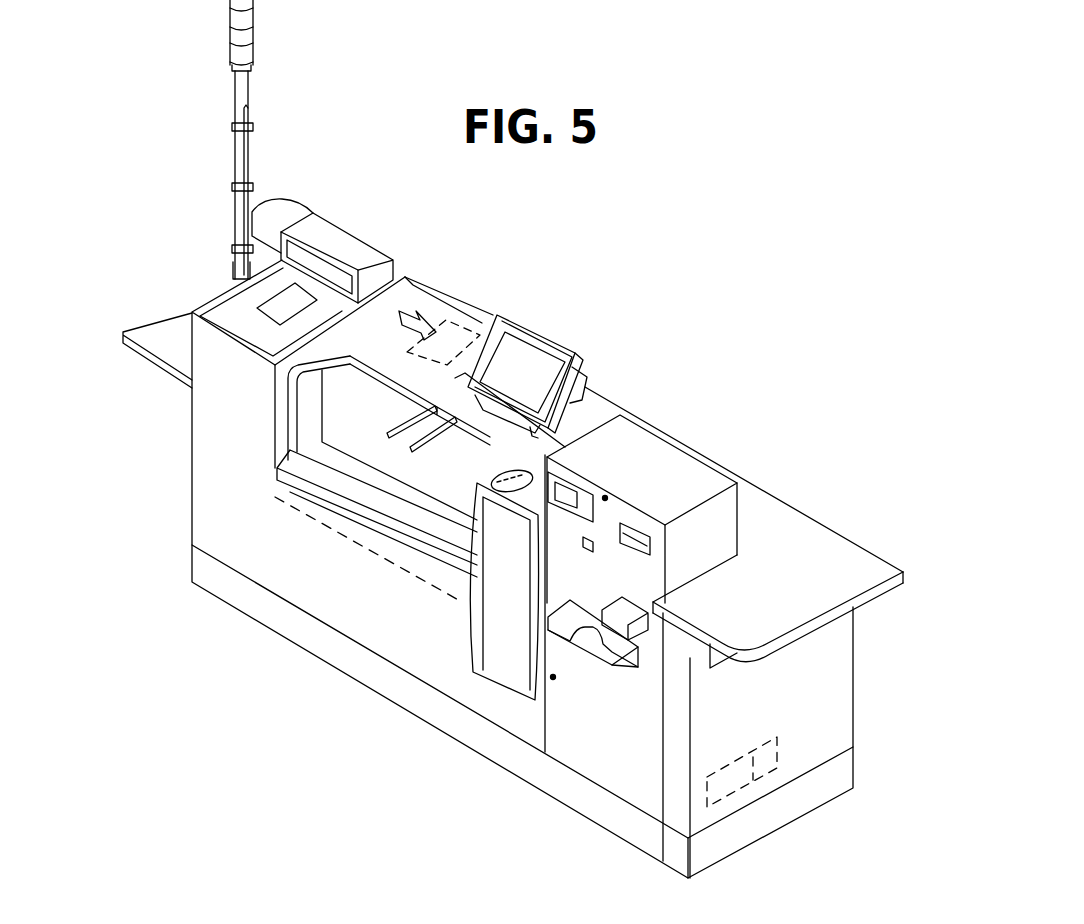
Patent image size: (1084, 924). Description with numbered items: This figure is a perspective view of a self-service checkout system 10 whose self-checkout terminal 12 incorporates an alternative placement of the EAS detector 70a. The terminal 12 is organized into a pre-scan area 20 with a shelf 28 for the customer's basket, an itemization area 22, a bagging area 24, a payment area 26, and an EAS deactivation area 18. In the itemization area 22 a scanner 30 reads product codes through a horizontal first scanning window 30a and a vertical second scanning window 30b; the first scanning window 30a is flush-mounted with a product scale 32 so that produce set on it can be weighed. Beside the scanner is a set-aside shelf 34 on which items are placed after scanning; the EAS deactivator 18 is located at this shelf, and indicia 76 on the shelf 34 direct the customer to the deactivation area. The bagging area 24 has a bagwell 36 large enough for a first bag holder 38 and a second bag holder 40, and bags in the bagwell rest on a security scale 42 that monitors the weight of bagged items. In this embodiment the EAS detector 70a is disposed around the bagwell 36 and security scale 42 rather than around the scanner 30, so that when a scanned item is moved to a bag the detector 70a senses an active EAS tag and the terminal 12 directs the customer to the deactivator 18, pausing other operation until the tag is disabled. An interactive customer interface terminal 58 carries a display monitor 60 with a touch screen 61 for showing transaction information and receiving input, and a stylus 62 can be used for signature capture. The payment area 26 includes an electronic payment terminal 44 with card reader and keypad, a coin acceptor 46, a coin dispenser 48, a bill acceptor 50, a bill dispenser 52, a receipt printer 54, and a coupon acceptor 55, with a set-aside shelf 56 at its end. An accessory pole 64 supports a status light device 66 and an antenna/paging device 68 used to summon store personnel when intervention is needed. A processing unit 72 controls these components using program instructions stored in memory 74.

The self-service checkout system 10 is at (657, 240).
The self-service checkout terminal 12 is at (228, 615).
The EAS deactivation area 18 is at (460, 330).
The pre-scan area 20 is at (126, 200).
The itemization area 22 is at (416, 214).
The bagging area 24 is at (345, 598).
The payment area 26 is at (590, 742).
The shelf 28 is at (136, 333).
The scanner 30 is at (242, 297).
The first scanning window 30a is at (268, 310).
The second scanning window 30b is at (318, 270).
The product scale 32 is at (268, 340).
The set-aside shelf 34 is at (410, 295).
The bagwell 36 is at (316, 490).
The first bag holder 38 is at (392, 358).
The second bag holder 40 is at (476, 452).
The security scale 42 is at (336, 533).
The electronic payment terminal 44 is at (498, 488).
The coin acceptor 46 is at (592, 497).
The coin dispenser 48 is at (565, 497).
The bill acceptor 50 is at (633, 612).
The bill dispenser 52 is at (633, 662).
The receipt printer 54 is at (515, 520).
The coupon acceptor 55 is at (633, 538).
The set-aside shelf 56 is at (832, 556).
The interactive customer interface terminal 58 is at (600, 355).
The display monitor 60 is at (507, 350).
The touch screen 61 is at (543, 368).
The stylus 62 is at (590, 390).
The pole 64 is at (237, 152).
The status light device 66 is at (250, 35).
The antenna/paging device 68 is at (248, 175).
The EAS detector 70a is at (285, 425).
The processing unit 72 is at (725, 780).
The memory 74 is at (775, 755).
The indicia 76 is at (422, 315).